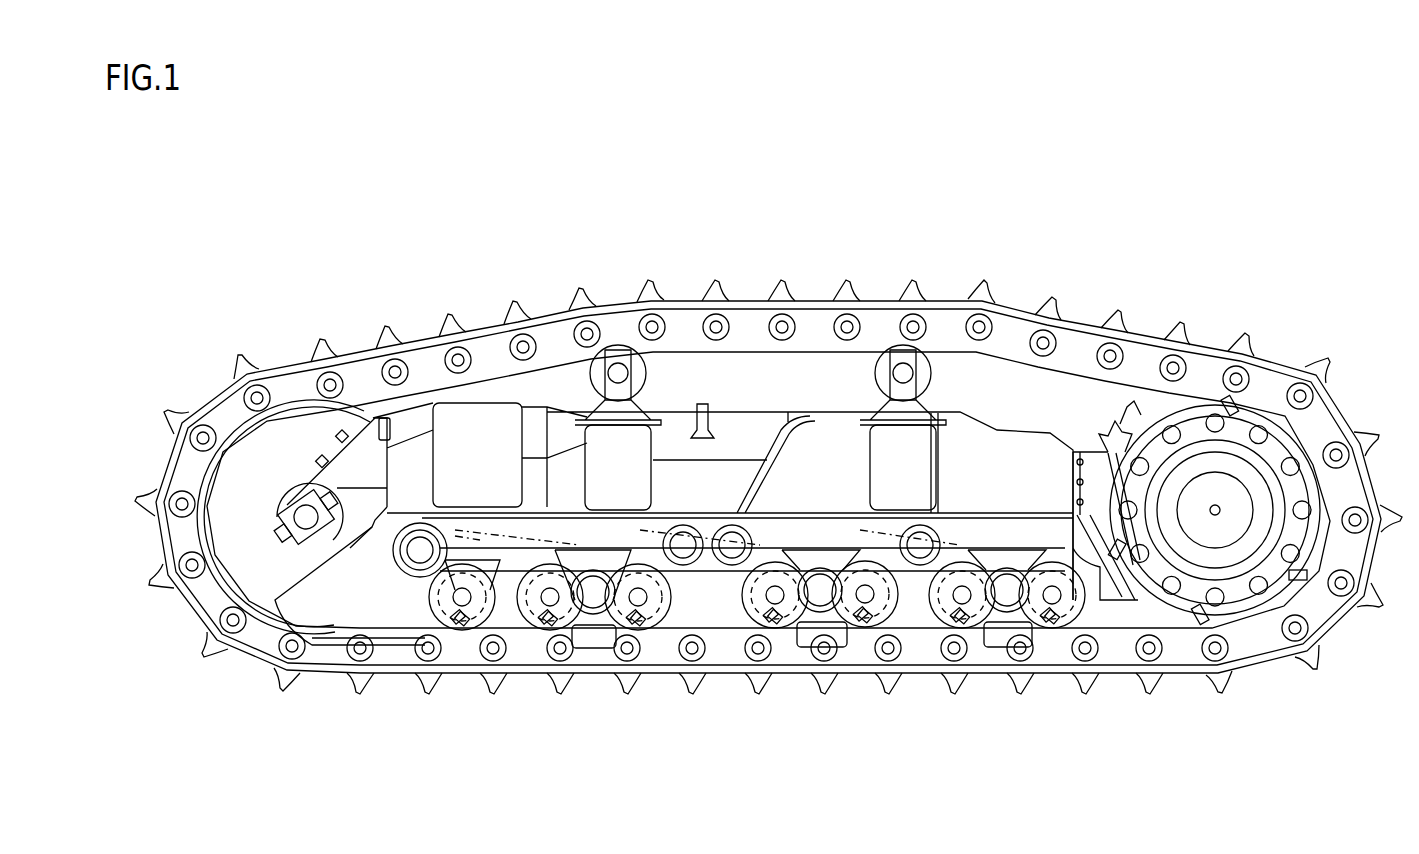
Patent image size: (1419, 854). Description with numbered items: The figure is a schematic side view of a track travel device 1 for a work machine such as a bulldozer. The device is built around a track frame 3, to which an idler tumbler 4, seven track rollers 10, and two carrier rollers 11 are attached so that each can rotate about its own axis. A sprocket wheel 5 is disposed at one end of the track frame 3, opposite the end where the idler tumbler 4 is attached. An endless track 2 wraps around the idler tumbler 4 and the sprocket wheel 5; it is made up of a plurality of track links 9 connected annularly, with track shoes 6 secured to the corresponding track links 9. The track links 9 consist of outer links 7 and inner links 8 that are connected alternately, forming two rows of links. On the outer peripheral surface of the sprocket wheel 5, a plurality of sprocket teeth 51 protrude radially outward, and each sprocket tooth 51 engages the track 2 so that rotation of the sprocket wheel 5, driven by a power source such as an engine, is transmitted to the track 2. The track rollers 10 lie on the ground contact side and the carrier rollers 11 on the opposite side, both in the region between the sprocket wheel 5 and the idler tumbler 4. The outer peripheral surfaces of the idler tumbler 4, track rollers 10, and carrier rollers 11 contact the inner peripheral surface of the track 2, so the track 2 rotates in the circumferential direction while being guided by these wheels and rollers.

The track travel device 1 is at (1305, 276).
The track 2 is at (823, 284).
The track frame 3 is at (738, 435).
The idler tumbler 4 is at (292, 440).
The sprocket wheel 5 is at (1240, 450).
The sprocket tooth 51 is at (1105, 440).
The track shoe 6 is at (358, 682).
The outer link 7 is at (429, 372).
The inner link 8 is at (488, 360).
The track link 9 is at (413, 279).
The track roller 10 is at (462, 633).
The carrier roller 11 is at (620, 352).